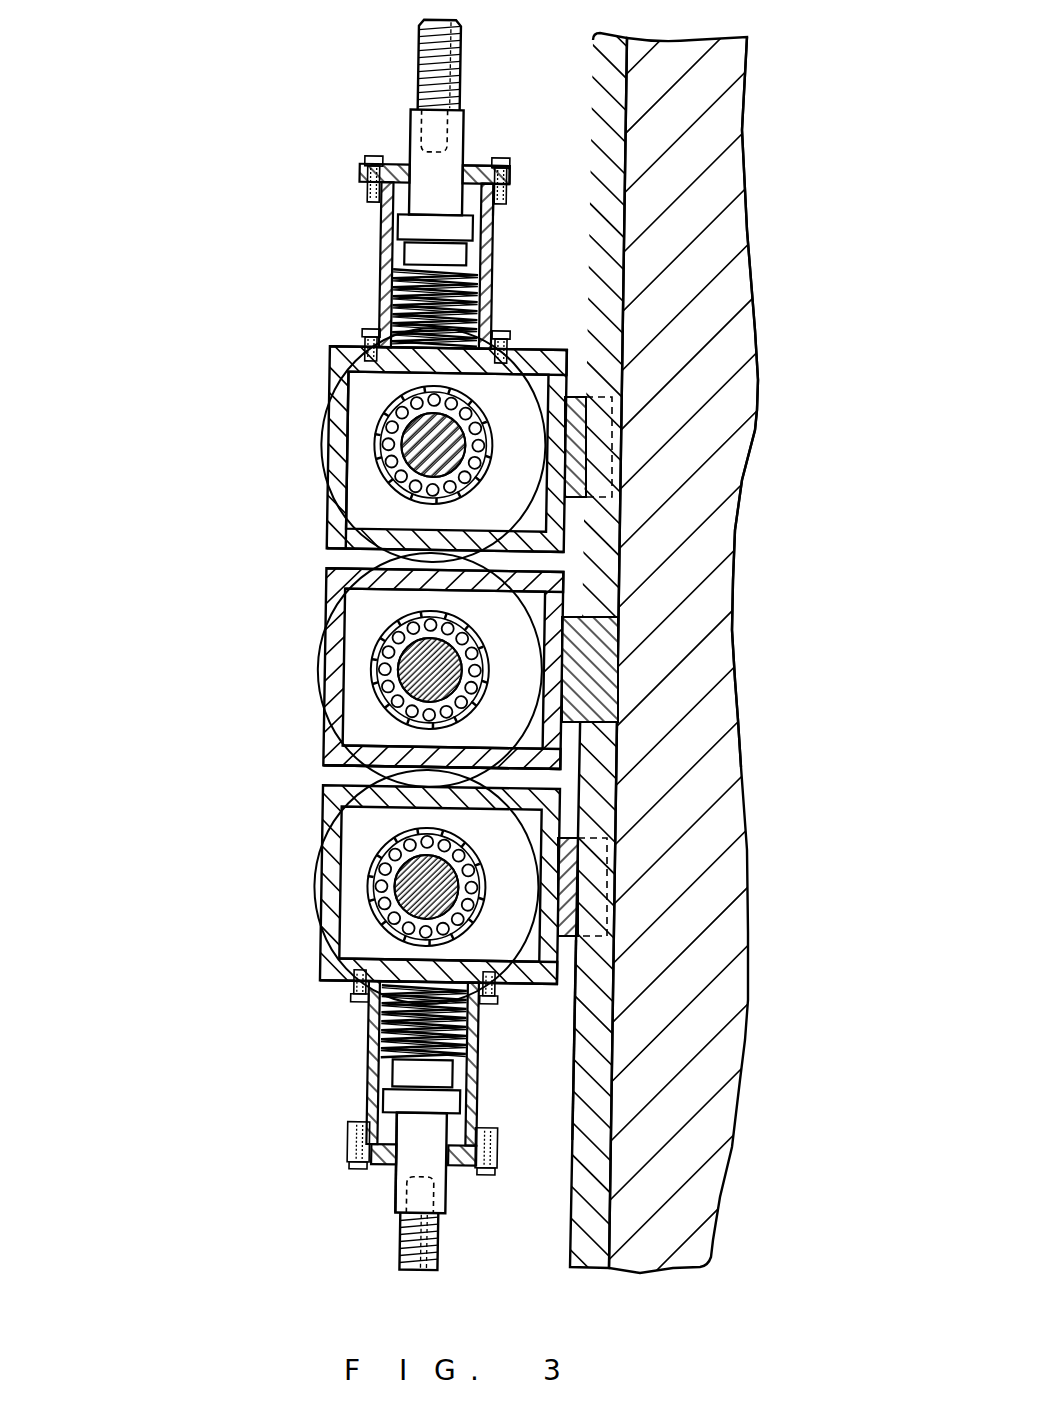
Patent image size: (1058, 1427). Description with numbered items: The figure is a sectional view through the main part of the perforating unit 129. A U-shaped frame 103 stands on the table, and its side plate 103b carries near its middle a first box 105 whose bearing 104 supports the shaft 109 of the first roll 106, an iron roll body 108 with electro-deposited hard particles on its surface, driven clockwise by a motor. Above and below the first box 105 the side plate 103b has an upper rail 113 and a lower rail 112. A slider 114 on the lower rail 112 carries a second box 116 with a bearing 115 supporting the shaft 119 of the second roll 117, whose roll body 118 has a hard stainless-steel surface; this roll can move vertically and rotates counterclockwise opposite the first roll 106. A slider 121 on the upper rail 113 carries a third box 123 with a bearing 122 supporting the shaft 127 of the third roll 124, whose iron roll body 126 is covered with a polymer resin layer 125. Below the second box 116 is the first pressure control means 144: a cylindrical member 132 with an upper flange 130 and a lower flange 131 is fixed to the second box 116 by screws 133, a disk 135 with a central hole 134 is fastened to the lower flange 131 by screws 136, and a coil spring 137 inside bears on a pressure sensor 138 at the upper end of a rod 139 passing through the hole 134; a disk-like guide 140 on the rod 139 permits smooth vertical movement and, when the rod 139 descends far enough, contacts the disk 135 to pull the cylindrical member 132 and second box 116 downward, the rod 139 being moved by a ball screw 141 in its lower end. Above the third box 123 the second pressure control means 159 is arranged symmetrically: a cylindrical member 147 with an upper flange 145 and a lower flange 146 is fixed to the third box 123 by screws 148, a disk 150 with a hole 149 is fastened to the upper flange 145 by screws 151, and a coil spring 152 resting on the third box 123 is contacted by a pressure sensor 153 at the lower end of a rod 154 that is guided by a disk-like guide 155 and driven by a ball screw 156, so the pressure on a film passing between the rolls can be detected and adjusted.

The frame 103 is at (742, 490).
The side plate 103b is at (722, 590).
The bearing 104 is at (393, 705).
The first box 105 is at (344, 590).
The first roll 106 is at (321, 640).
The roll body 108 is at (356, 705).
The shaft 109 is at (347, 762).
The rail 112 is at (571, 1098).
The rail 113 is at (590, 262).
The slider 114 is at (565, 975).
The bearing 115 is at (400, 870).
The second box 116 is at (345, 962).
The second roll 117 is at (318, 870).
The roll body 118 is at (345, 925).
The shaft 119 is at (348, 832).
The slider 121 is at (576, 395).
The bearing 122 is at (415, 468).
The third box 123 is at (343, 540).
The third roll 124 is at (319, 445).
The polymer resin layer 125 is at (340, 375).
The roll body 126 is at (356, 405).
The shaft 127 is at (383, 480).
The perforating unit 129 is at (432, 661).
The upper flange 130 is at (367, 988).
The lower flange 131 is at (380, 1152).
The cylindrical member 132 is at (485, 1062).
The screws 133 is at (360, 992).
The hole 134 is at (410, 1160).
The disk 135 is at (456, 1172).
The screws 136 is at (362, 1172).
The coil spring 137 is at (384, 1062).
The pressure sensor 138 is at (407, 1080).
The rod 139 is at (448, 1200).
The disk-like guide 140 is at (462, 1102).
The ball screw 141 is at (447, 1250).
The first pressure control means 144 is at (388, 1130).
The upper flange 145 is at (503, 200).
The lower flange 146 is at (505, 335).
The cylindrical member 147 is at (471, 240).
The screws 148 is at (360, 330).
The hole 149 is at (482, 170).
The disk 150 is at (495, 180).
The screws 151 is at (364, 160).
The coil spring 152 is at (389, 278).
The pressure sensor 153 is at (403, 255).
The rod 154 is at (457, 120).
The disk-like guide 155 is at (398, 230).
The ball screw 156 is at (409, 88).
The second pressure control means 159 is at (417, 109).